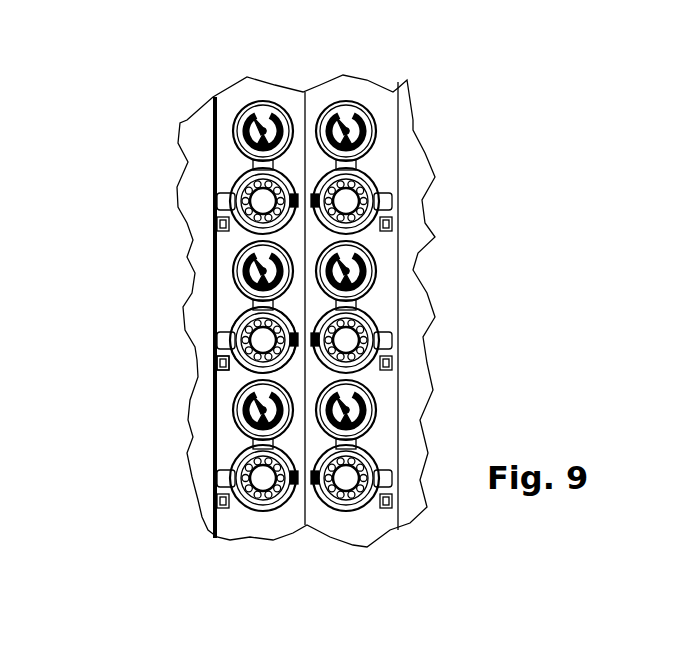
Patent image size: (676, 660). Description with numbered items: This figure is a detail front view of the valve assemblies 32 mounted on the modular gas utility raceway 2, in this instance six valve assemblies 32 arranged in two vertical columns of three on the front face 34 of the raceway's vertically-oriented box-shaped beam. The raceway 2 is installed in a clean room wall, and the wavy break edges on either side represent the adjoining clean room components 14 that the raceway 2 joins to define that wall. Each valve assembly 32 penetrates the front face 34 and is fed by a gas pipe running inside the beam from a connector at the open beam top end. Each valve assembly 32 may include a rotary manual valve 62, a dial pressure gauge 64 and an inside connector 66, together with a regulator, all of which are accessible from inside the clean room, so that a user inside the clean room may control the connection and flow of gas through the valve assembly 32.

The modular gas utility raceway 2 is at (294, 284).
The clean room components 14 is at (192, 198).
The valve assembly 32 is at (227, 182).
The front face 34 is at (230, 95).
The rotary manual valve 62 is at (240, 360).
The dial pressure gauge 64 is at (231, 278).
The inside connector 66 is at (220, 368).